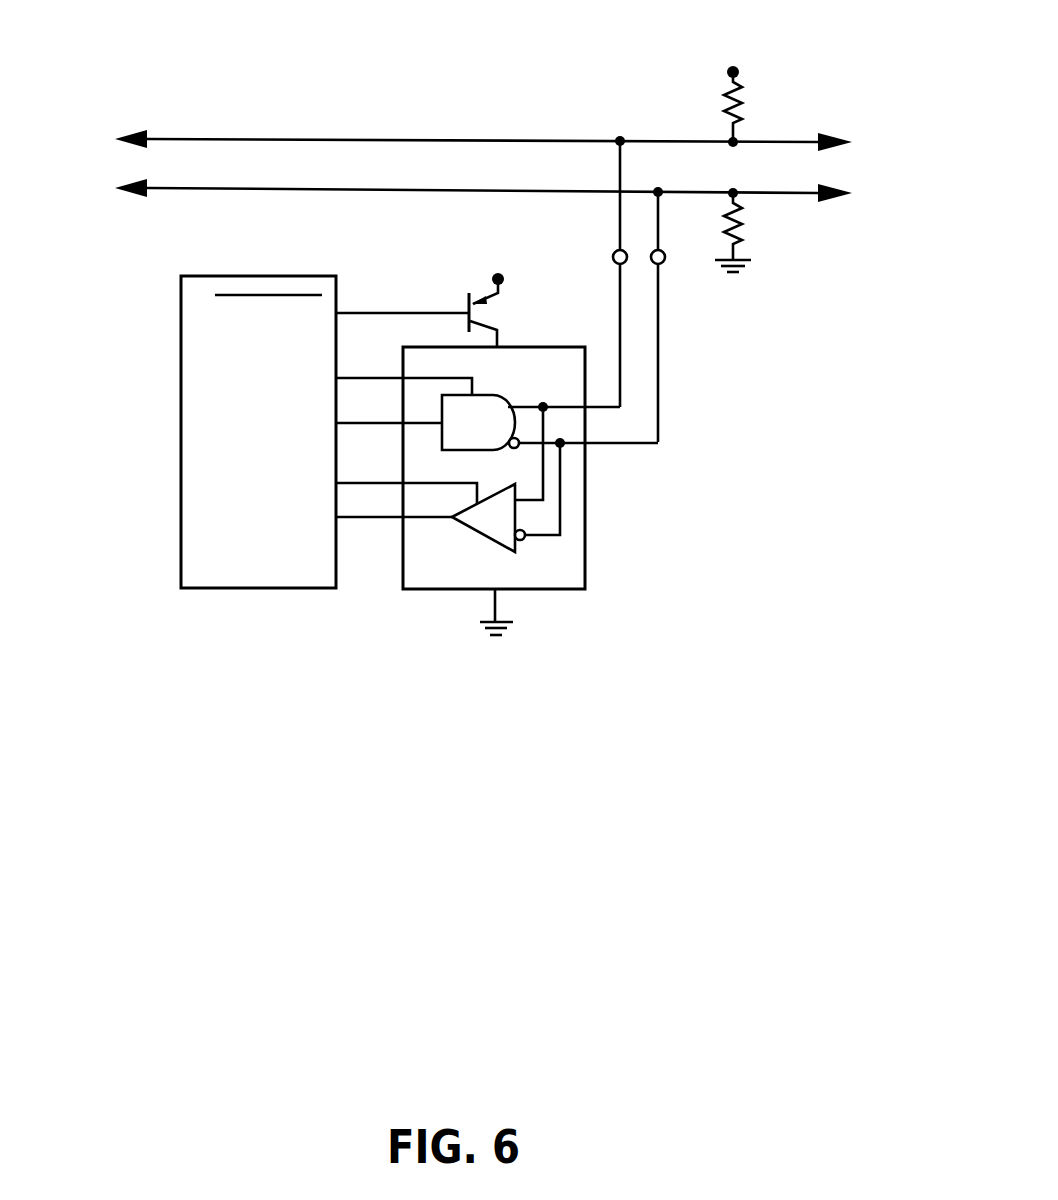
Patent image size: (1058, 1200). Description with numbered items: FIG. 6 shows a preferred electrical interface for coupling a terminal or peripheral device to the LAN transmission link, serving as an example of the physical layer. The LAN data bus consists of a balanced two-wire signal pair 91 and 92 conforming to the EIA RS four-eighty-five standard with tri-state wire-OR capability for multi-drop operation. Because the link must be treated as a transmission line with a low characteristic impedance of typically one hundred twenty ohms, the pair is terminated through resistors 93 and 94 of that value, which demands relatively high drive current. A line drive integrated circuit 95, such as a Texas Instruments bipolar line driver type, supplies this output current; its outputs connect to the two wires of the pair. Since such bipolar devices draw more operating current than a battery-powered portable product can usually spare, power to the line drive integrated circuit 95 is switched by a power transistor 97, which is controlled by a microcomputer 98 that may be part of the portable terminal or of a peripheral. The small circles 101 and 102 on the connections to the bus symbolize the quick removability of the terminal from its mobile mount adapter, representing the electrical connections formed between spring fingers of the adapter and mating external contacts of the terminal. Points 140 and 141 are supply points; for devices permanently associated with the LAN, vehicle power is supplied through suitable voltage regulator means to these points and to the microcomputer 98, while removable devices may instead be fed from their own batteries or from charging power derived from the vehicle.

The signal pair wire 91 is at (277, 135).
The signal pair wire 92 is at (277, 194).
The termination resistor 93 is at (721, 97).
The termination resistor 94 is at (737, 233).
The line drive integrated circuit 95 is at (590, 532).
The power transistor 97 is at (465, 305).
The microcomputer 98 is at (170, 403).
The small circle 101 is at (613, 252).
The small circle 102 is at (665, 262).
The power supply point 140 is at (743, 70).
The power supply point 141 is at (505, 277).